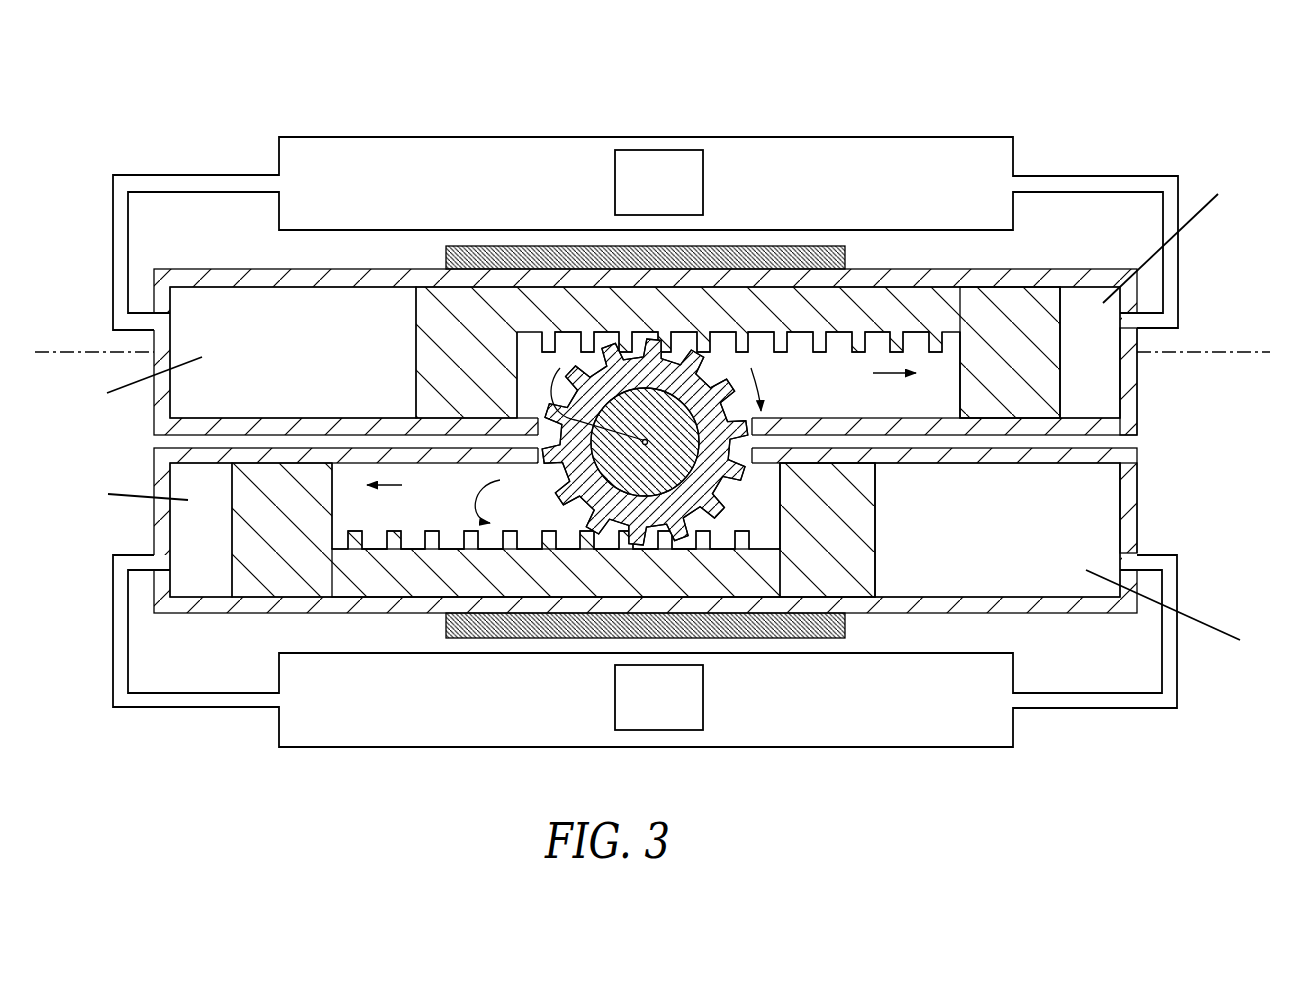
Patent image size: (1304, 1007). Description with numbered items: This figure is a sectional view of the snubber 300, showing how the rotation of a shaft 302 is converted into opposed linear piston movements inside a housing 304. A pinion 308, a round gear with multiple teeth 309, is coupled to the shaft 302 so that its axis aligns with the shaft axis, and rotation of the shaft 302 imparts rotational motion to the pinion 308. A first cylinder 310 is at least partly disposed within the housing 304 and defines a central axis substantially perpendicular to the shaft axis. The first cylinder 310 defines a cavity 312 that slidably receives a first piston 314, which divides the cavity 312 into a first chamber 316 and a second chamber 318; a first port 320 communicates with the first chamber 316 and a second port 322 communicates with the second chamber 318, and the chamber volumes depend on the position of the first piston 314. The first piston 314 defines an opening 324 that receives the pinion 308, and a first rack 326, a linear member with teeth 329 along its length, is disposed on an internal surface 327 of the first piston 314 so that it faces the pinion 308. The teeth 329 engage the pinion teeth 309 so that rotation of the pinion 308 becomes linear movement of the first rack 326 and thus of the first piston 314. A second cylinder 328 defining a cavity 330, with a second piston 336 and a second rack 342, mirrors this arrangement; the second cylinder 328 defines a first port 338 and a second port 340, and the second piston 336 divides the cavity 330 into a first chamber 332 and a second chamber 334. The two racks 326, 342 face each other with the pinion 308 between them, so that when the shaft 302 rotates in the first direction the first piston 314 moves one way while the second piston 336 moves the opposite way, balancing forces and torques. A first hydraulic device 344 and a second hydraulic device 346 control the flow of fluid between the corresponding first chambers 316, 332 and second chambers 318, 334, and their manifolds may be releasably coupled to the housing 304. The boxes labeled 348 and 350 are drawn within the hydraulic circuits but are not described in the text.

The snubber 300 is at (100, 128).
The shaft 302 is at (583, 487).
The housing 304 is at (843, 244).
The pinion 308 is at (528, 402).
The teeth 309 is at (733, 478).
The first cylinder 310 is at (1128, 470).
The cavity 312 is at (1103, 525).
The first piston 314 is at (860, 510).
The first chamber 316 is at (218, 537).
The second chamber 318 is at (1051, 542).
The first port 320 is at (168, 563).
The second port 322 is at (1122, 563).
The opening 324 is at (458, 491).
The first rack 326 is at (504, 494).
The internal surface 327 is at (433, 587).
The second cylinder 328 is at (1128, 396).
The teeth 329 is at (458, 546).
The cavity 330 is at (1097, 375).
The first chamber 332 is at (1111, 337).
The second chamber 334 is at (311, 363).
The second piston 336 is at (1013, 327).
The first port 338 is at (1120, 322).
The second port 340 is at (165, 322).
The second rack 342 is at (840, 374).
The first hydraulic device 344 is at (988, 716).
The second hydraulic device 346 is at (965, 189).
The lower pump 348 is at (676, 710).
The upper pump 350 is at (676, 193).